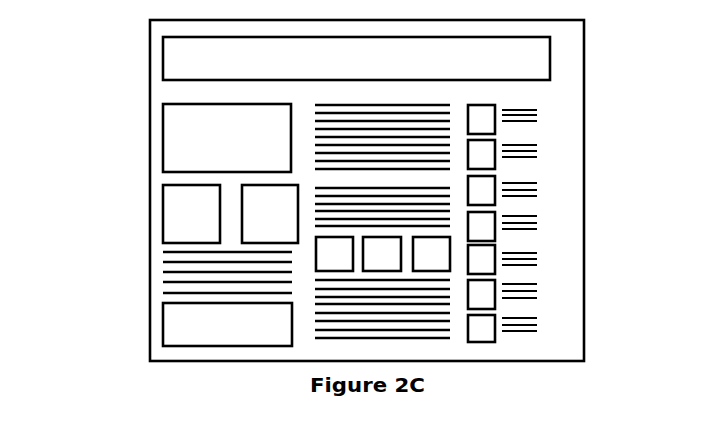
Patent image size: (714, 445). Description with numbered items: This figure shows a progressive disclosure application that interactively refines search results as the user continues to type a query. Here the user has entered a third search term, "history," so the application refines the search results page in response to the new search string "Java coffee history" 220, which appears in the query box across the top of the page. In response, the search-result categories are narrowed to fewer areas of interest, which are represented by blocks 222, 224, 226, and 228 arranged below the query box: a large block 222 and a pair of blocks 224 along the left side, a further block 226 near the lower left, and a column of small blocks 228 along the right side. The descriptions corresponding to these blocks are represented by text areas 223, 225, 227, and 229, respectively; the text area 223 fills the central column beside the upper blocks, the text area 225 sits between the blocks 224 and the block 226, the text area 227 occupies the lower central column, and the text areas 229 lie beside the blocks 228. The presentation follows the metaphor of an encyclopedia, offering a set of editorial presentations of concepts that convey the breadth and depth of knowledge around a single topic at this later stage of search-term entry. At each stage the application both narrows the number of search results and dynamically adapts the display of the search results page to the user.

The search string 220 is at (163, 60).
The search-result category block 222 is at (163, 140).
The text area 223 is at (423, 105).
The search-result category block 224 is at (163, 211).
The text area 225 is at (163, 272).
The search-result category block 226 is at (163, 320).
The text area 227 is at (323, 346).
The search-result category block 228 is at (483, 342).
The text area 229 is at (527, 333).